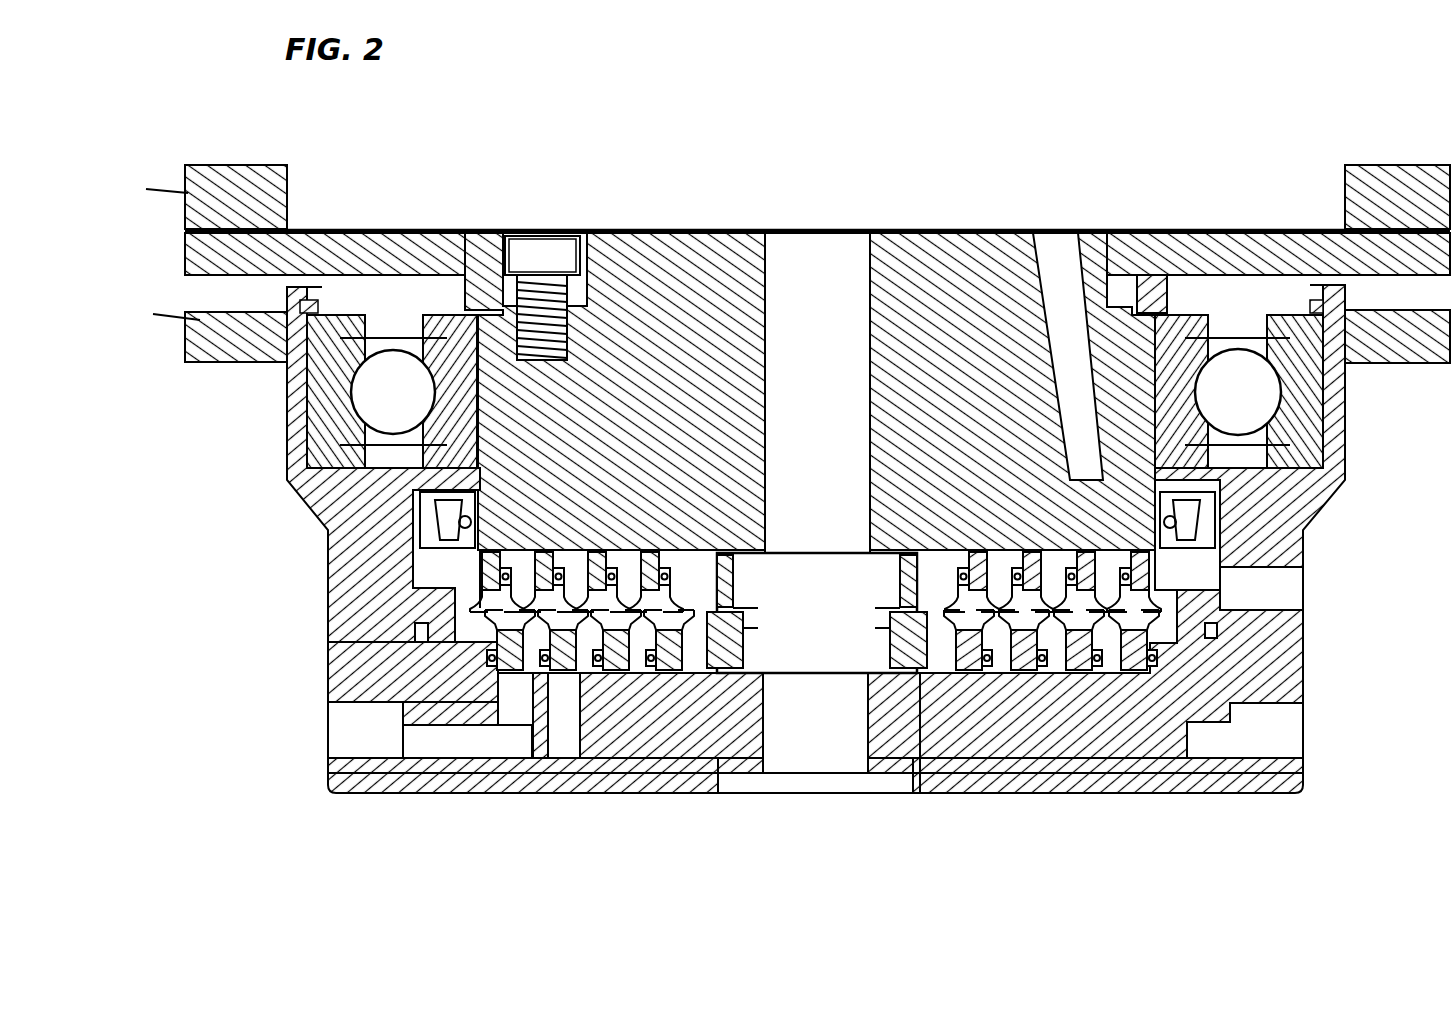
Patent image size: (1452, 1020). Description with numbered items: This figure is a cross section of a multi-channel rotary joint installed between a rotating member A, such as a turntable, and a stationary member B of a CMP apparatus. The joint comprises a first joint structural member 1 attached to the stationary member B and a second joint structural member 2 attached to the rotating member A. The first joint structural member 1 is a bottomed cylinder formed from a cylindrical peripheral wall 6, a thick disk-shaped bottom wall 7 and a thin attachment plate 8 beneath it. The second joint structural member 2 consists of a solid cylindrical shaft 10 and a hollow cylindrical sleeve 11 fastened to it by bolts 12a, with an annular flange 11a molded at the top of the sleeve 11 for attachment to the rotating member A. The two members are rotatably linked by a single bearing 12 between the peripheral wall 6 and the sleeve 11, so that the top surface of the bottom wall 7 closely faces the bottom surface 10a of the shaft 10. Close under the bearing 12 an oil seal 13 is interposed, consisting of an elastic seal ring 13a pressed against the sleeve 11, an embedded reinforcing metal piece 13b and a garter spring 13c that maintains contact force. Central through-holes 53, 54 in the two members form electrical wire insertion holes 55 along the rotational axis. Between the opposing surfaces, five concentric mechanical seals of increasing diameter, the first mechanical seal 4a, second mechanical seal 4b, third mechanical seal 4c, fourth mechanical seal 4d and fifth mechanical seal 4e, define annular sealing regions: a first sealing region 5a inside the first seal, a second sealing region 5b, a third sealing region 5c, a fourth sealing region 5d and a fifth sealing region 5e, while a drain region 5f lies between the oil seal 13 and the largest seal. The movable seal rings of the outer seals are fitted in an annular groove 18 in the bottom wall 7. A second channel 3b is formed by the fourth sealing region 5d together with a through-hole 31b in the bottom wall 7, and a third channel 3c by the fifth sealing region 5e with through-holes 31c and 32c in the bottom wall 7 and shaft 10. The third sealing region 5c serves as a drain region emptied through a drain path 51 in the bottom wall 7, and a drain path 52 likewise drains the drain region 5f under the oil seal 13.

The first joint structural member 1 is at (503, 805).
The second joint structural member 2 is at (975, 222).
The second channel 3b is at (560, 760).
The third channel 3c is at (1062, 262).
The first mechanical seal 4a is at (882, 580).
The second mechanical seal 4b is at (950, 635).
The third mechanical seal 4c is at (998, 580).
The fourth mechanical seal 4d is at (1045, 630).
The fifth mechanical seal 4e is at (1165, 632).
The first sealing region 5a is at (832, 657).
The second sealing region 5b is at (700, 555).
The third sealing region 5c is at (650, 552).
The fourth sealing region 5d is at (605, 672).
The fifth sealing region 5e is at (520, 682).
The drain region 5f is at (1282, 510).
The peripheral wall 6 is at (1345, 405).
The bottom wall 7 is at (1280, 668).
The attachment plate 8 is at (1125, 798).
The shaft 10 is at (603, 233).
The bottom surface of the shaft 10a is at (485, 598).
The sleeve 11 is at (492, 372).
The annular flange 11a is at (212, 258).
The bearing 12 is at (1330, 445).
The bolt 12a is at (556, 250).
The oil seal 13 is at (1330, 472).
The seal ring 13a is at (360, 440).
The reinforcing metal piece 13b is at (405, 478).
The garter spring 13c is at (425, 525).
The annular groove 18 is at (660, 668).
The through-hole 31b is at (586, 700).
The through-hole 31c is at (420, 750).
The through-hole 32c is at (1075, 315).
The drain path 51 is at (1275, 735).
The drain path 52 is at (1280, 595).
The through-hole 53 is at (865, 735).
The through-hole 54 is at (858, 255).
The electrical wire insertion hole 55 is at (783, 760).